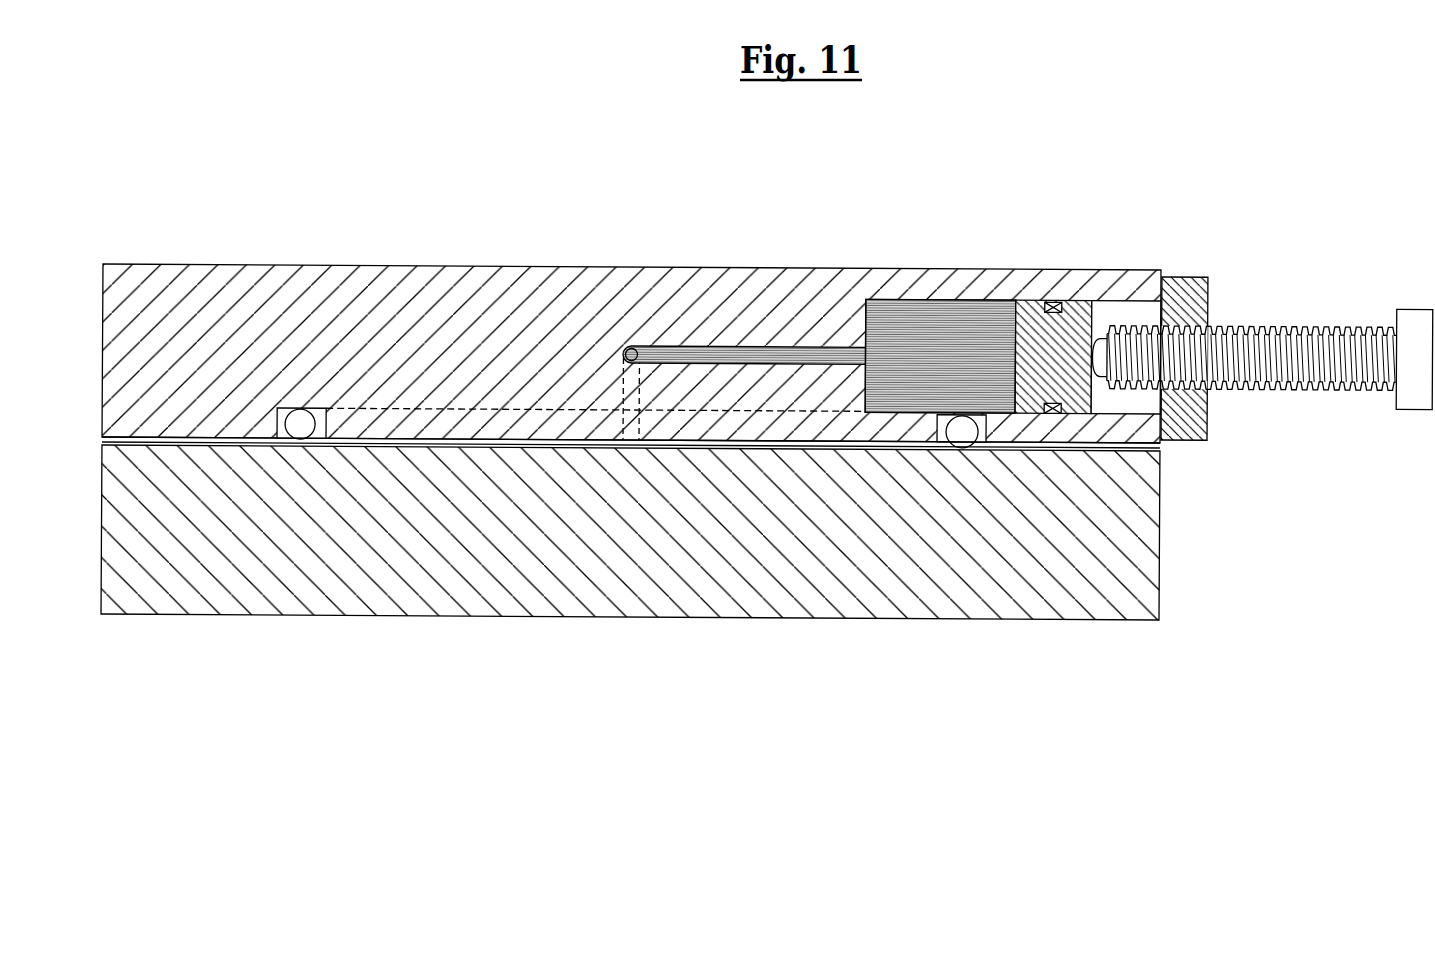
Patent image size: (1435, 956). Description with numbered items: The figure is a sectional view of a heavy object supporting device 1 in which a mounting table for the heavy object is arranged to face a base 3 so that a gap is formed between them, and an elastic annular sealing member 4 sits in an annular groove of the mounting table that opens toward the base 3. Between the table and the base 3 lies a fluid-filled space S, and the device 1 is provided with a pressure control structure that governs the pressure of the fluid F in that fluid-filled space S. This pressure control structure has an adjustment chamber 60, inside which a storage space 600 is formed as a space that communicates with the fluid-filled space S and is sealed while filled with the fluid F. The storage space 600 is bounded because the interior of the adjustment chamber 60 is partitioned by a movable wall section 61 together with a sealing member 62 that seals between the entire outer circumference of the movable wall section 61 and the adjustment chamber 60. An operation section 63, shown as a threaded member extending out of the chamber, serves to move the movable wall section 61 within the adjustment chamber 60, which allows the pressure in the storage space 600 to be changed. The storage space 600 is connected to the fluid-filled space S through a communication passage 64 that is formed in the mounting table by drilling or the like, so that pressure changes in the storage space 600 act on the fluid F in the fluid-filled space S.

The heavy object supporting device 1 is at (263, 206).
The base 3 is at (1170, 551).
The elastic annular sealing member 4 is at (973, 446).
The fluid-filled space S is at (540, 446).
The adjustment chamber 60 is at (1013, 276).
The storage space 600 is at (894, 332).
The fluid F is at (944, 327).
The movable wall section 61 is at (1000, 296).
The sealing member 62 is at (1050, 298).
The operation section 63 is at (1324, 321).
The communication passage 64 is at (735, 343).